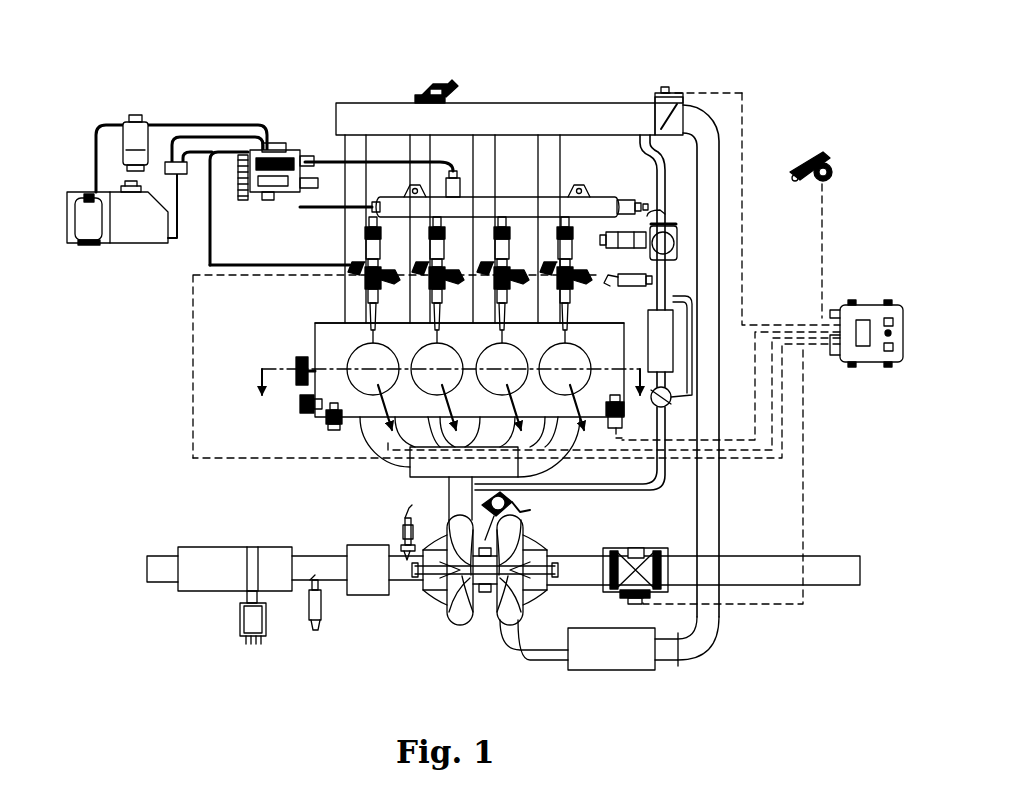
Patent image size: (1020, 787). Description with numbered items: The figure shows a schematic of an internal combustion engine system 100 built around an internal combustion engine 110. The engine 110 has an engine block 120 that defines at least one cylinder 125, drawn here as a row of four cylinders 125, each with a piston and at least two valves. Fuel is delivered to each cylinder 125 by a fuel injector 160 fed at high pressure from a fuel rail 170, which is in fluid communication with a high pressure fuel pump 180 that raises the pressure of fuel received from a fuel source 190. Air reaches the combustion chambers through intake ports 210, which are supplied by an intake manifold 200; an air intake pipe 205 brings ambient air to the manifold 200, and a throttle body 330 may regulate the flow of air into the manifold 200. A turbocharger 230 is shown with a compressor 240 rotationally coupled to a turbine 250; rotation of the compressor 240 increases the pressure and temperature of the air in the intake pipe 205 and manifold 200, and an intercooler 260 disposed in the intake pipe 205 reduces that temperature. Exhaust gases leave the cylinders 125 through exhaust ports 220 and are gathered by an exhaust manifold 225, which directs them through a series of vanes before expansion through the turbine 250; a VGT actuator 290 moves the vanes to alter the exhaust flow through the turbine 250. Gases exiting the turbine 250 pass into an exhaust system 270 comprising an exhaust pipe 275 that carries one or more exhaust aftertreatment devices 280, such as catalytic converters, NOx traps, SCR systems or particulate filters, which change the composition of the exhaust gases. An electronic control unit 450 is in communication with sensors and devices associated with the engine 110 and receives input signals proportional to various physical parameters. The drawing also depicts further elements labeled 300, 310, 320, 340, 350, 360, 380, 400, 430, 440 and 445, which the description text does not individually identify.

The internal combustion engine system 100 is at (252, 88).
The internal combustion engine 110 is at (575, 92).
The engine block 120 is at (315, 326).
The cylinder 125 is at (590, 348).
The fuel injector 160 is at (364, 300).
The fuel rail 170 is at (372, 207).
The high pressure fuel pump 180 is at (280, 150).
The fuel source 190 is at (140, 235).
The intake manifold 200 is at (488, 108).
The air intake pipe 205 is at (832, 572).
The intake port 210 is at (360, 326).
The exhaust port 220 is at (383, 424).
The exhaust manifold 225 is at (435, 470).
The turbocharger 230 is at (458, 610).
The compressor 240 is at (512, 612).
The turbine 250 is at (445, 600).
The intercooler 260 is at (645, 655).
The exhaust system 270 is at (215, 535).
The exhaust pipe 275 is at (163, 575).
The exhaust aftertreatment devices 280 is at (205, 572).
The VGT actuator 290 is at (512, 506).
The air filter / throttle 300 is at (630, 494).
The EGR passage 310 is at (702, 400).
The EGR control valve 320 is at (667, 224).
The throttle body 330 is at (668, 88).
The intake air sensor 340 is at (628, 598).
The manifold temperature sensor 350 is at (430, 88).
The exhaust collector 360 is at (438, 470).
The engine sensors 380 is at (326, 420).
The rail pressure sensor 400 is at (638, 200).
The exhaust sensors 430 is at (315, 632).
The sensor 440 is at (650, 280).
The accelerator pedal sensor 445 is at (826, 160).
The electronic control unit 450 is at (872, 305).